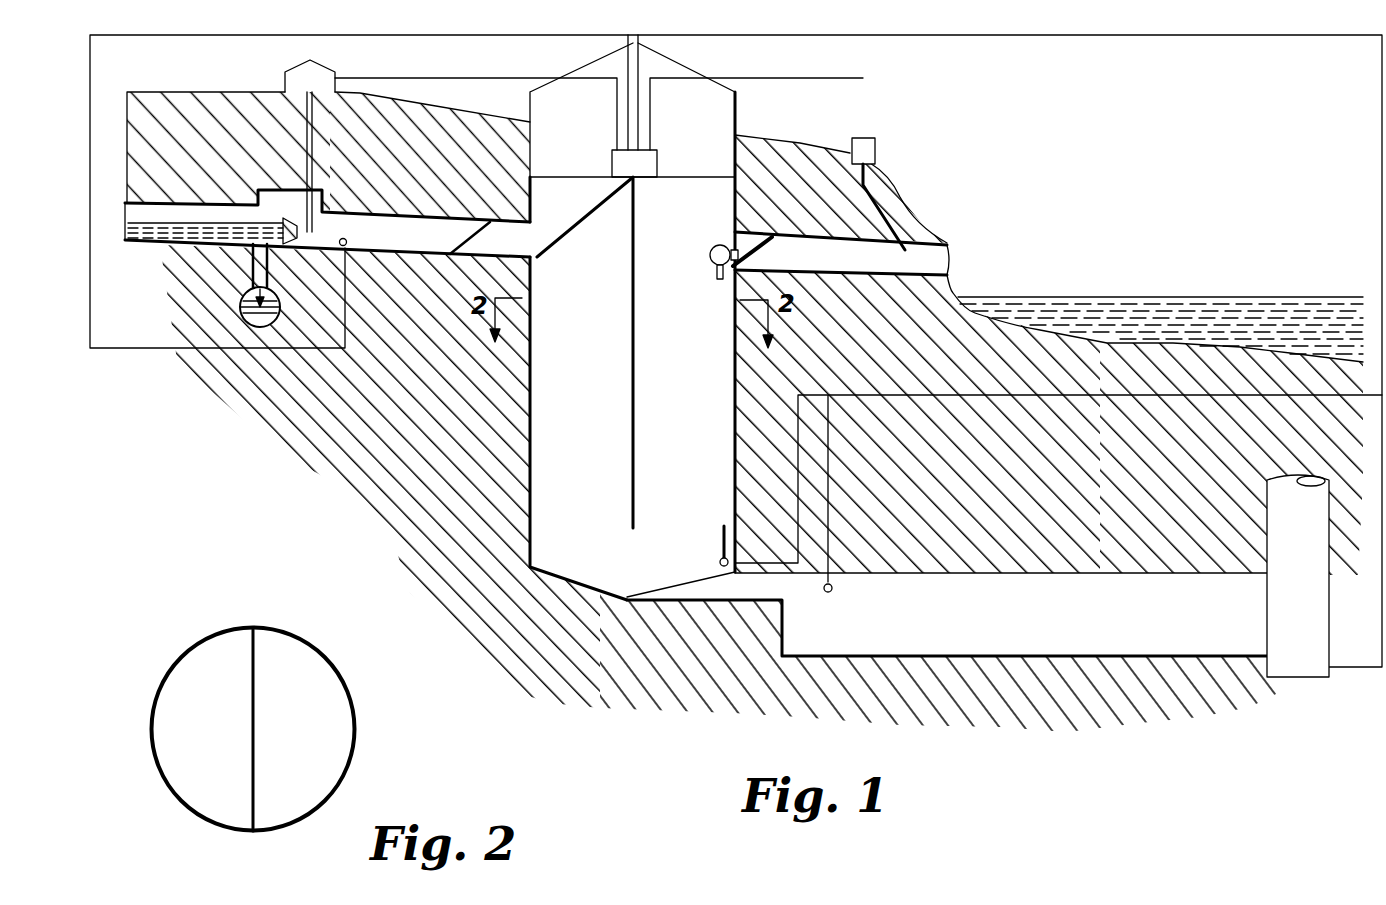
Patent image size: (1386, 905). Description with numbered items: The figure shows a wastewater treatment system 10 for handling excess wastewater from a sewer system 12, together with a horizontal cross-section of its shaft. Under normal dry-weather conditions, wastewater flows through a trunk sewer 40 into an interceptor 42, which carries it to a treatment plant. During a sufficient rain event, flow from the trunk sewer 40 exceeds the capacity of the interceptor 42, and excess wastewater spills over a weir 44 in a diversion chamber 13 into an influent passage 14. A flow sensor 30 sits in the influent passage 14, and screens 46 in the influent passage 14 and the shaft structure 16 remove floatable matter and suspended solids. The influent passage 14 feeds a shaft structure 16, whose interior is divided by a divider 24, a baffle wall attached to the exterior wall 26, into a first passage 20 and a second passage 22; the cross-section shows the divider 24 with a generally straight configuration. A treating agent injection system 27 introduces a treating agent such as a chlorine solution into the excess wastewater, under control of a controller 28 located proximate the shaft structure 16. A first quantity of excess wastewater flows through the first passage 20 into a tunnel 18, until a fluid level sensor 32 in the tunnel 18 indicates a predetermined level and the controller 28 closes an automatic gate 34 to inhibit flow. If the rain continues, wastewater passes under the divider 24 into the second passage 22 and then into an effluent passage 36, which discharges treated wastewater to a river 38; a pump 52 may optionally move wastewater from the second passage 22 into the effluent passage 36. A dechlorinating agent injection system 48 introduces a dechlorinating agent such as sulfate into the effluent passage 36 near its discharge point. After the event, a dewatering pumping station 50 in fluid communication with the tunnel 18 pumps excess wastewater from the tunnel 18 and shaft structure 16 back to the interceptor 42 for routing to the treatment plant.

In FIG. 1, the wastewater treatment system 10 is at (393, 480).
In FIG. 1, the sewer system 12 is at (215, 190).
In FIG. 1, the diversion chamber 13 is at (325, 200).
In FIG. 1, the influent passage 14 is at (418, 215).
In FIG. 1, the shaft structure 16 is at (631, 346).
In FIG. 1, the tunnel 18 is at (1023, 657).
In FIG. 1, the first passage 20 is at (550, 460).
In FIG. 2, the first passage 20 is at (213, 677).
In FIG. 1, the second passage 22 is at (732, 388).
In FIG. 2, the second passage 22 is at (290, 677).
In FIG. 1, the divider 24 is at (632, 492).
In FIG. 2, the divider 24 is at (250, 722).
In FIG. 1, the exterior wall 26 is at (526, 412).
In FIG. 2, the exterior wall 26 is at (357, 740).
In FIG. 1, the treating agent injection system 27 is at (297, 66).
In FIG. 1, the controller 28 is at (612, 158).
In FIG. 1, the flow sensor 30 is at (346, 247).
In FIG. 1, the fluid level sensor 32 is at (832, 584).
In FIG. 1, the automatic gate 34 is at (719, 537).
In FIG. 1, the effluent passage 36 is at (798, 232).
In FIG. 1, the river 38 is at (1121, 290).
In FIG. 1, the trunk sewer 40 is at (173, 246).
In FIG. 1, the interceptor 42 is at (240, 304).
In FIG. 1, the weir 44 is at (291, 247).
In FIG. 1, the screens 46 is at (522, 177).
In FIG. 1, the dechlorinating agent injection system 48 is at (877, 157).
In FIG. 1, the dewatering pumping station 50 is at (1266, 535).
In FIG. 1, the pump 52 is at (708, 252).